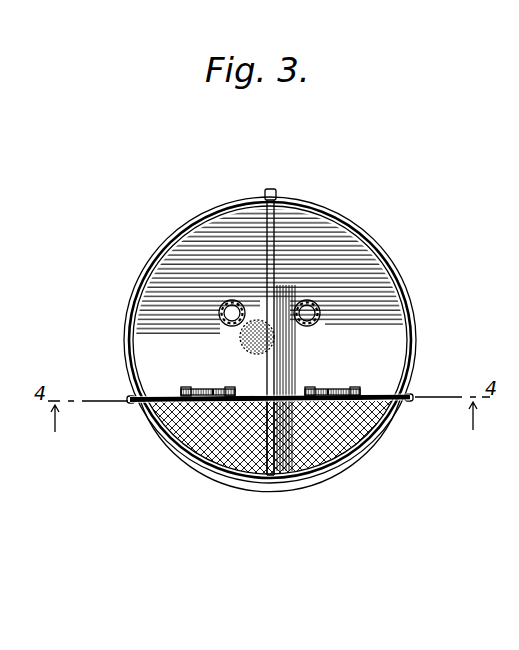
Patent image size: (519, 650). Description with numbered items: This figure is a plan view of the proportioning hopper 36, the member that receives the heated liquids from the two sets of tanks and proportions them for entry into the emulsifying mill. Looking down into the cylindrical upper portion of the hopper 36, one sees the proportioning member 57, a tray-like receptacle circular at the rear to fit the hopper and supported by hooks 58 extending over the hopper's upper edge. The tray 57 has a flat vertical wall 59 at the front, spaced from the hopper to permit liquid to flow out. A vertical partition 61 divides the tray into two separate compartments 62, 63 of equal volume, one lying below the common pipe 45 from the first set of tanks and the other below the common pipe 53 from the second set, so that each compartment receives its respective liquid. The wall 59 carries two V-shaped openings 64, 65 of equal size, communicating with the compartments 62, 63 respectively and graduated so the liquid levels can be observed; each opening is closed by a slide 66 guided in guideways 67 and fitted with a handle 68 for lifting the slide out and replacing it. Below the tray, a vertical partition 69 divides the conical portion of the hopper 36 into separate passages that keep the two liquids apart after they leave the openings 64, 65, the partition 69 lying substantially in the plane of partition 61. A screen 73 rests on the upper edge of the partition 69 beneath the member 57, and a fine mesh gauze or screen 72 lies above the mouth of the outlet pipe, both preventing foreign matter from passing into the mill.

The proportioning hopper 36 is at (316, 213).
The common pipe 45 is at (219, 307).
The common pipe 53 is at (316, 304).
The proportioning member 57 is at (367, 238).
The hooks 58 is at (272, 189).
The flat vertical wall 59 is at (382, 391).
The vertical partition 61 is at (266, 258).
The compartment 62 is at (165, 333).
The compartment 63 is at (378, 305).
The V-shaped opening 64 is at (172, 433).
The V-shaped opening 65 is at (338, 398).
The slide 66 is at (200, 392).
The guideways 67 is at (183, 390).
The handle 68 is at (212, 392).
The vertical partition 69 is at (258, 462).
The fine mesh gauze or screen 72 is at (240, 337).
The screen 73 is at (192, 457).